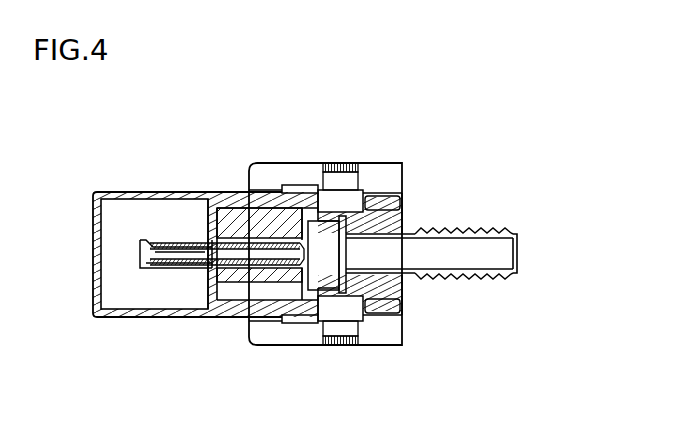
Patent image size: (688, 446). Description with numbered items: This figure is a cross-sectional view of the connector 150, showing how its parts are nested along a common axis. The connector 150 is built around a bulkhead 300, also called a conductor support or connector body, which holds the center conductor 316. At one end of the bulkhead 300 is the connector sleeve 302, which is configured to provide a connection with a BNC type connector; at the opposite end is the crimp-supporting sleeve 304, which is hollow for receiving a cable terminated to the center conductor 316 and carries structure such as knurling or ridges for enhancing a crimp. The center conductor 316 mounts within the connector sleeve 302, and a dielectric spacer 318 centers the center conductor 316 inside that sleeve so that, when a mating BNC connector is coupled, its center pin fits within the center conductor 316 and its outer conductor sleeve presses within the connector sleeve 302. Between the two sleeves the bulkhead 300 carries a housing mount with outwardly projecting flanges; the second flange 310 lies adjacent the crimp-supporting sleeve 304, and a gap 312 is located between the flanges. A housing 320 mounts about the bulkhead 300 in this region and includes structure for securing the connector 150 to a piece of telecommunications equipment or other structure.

The connector 150 is at (402, 116).
The bulkhead 300 is at (208, 183).
The connector sleeve 302 is at (99, 191).
The crimp-supporting sleeve 304 is at (477, 232).
The second flange 310 is at (385, 314).
The gap 312 is at (347, 296).
The center conductor 316 is at (168, 243).
The dielectric spacer 318 is at (223, 220).
The housing 320 is at (305, 155).